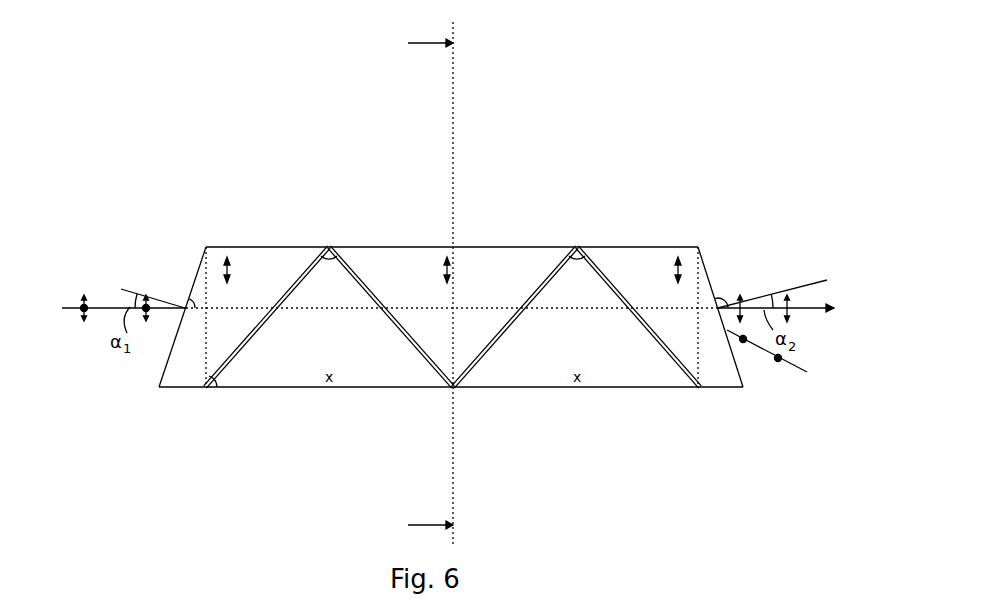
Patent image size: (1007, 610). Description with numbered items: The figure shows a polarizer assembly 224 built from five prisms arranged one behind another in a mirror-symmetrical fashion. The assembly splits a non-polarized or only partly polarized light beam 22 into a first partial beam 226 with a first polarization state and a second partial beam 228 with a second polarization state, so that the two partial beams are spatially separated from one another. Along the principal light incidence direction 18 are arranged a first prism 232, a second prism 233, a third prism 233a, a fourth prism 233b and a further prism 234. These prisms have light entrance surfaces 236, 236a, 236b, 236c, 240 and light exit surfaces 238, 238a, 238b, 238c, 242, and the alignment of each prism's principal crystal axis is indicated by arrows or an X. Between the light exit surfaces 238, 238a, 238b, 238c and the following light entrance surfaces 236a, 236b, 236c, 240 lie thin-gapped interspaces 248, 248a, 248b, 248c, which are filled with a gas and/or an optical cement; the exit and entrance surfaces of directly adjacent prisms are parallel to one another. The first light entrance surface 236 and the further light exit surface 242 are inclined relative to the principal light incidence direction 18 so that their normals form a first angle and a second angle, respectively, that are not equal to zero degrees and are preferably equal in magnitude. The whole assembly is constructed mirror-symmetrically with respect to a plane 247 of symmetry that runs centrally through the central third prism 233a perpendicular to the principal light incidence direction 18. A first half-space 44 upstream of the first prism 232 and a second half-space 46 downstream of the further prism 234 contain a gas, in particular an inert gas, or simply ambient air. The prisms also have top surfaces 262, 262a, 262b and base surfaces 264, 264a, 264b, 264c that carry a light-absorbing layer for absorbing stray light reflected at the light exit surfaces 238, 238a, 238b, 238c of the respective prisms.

The principal light incidence direction 18 is at (810, 308).
The light beam 22 is at (68, 308).
The first half-space 44 is at (155, 182).
The second half-space 46 is at (758, 205).
The polarizer assembly 224 is at (433, 158).
The first partial beam 226 is at (745, 302).
The second partial beam 228 is at (776, 364).
The first prism 232 is at (217, 247).
The second prism 233 is at (243, 388).
The third prism 233a is at (371, 258).
The fourth prism 233b is at (543, 388).
The further prism 234 is at (613, 258).
The first light entrance surface 236 is at (193, 272).
The light entrance surface 236a is at (322, 247).
The light entrance surface 236b is at (384, 296).
The light entrance surface 236c is at (488, 350).
The light exit surface 238 is at (282, 301).
The light exit surface 238a is at (381, 317).
The light exit surface 238b is at (535, 286).
The light exit surface 238c is at (574, 248).
The light entrance surface 240 is at (700, 388).
The further light exit surface 242 is at (740, 365).
The plane of symmetry 247 is at (453, 97).
The thin-gapped interspace 248 is at (206, 389).
The thin-gapped interspace 248a is at (425, 355).
The thin-gapped interspace 248b is at (515, 307).
The thin-gapped interspace 248c is at (665, 330).
The top surface 262 is at (307, 247).
The top surface 262a is at (483, 247).
The top surface 262b is at (648, 246).
The base surface 264 is at (168, 388).
The base surface 264a is at (300, 388).
The base surface 264b is at (580, 388).
The base surface 264c is at (723, 387).